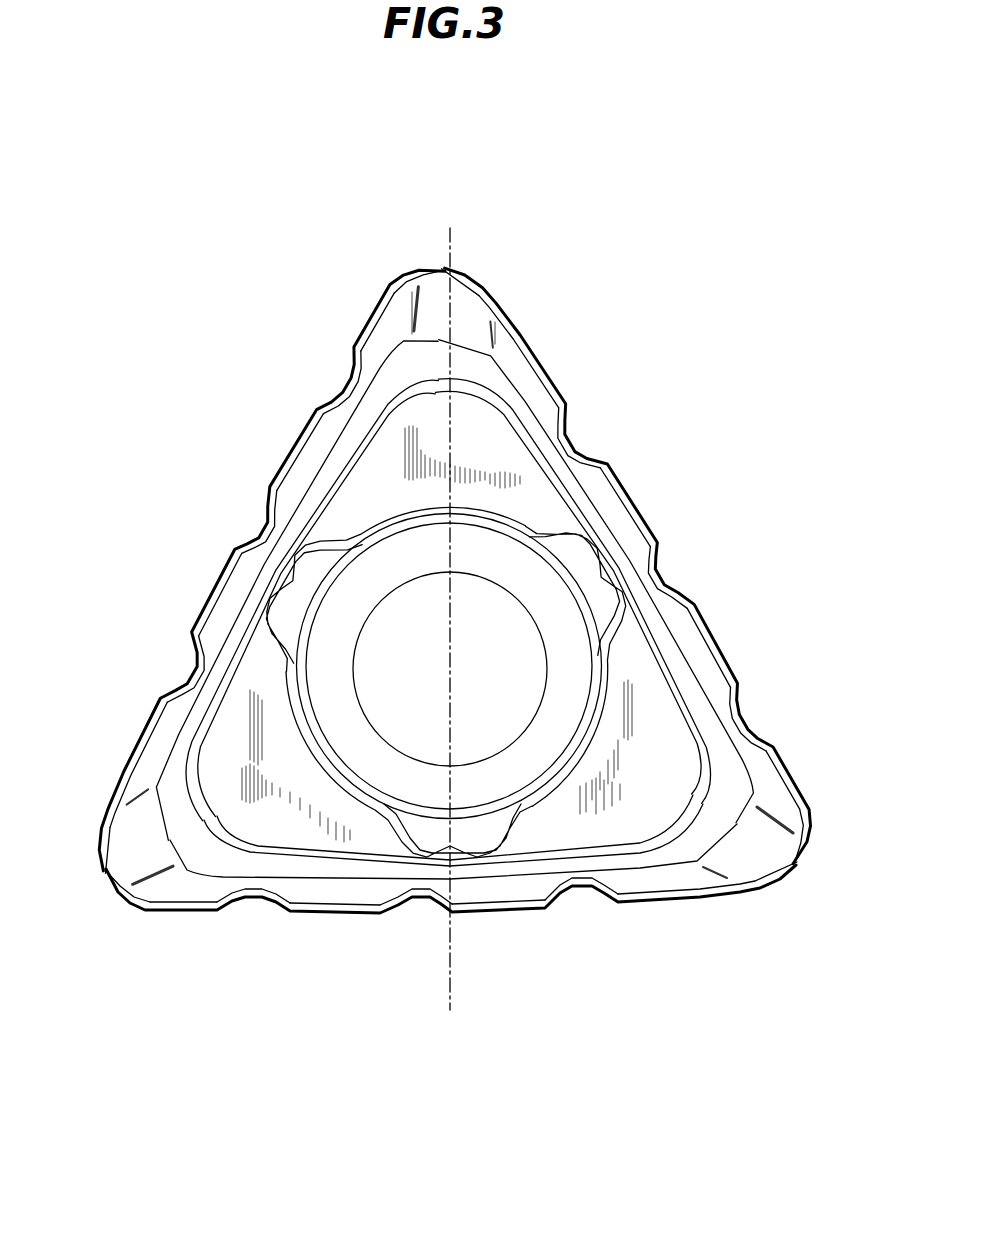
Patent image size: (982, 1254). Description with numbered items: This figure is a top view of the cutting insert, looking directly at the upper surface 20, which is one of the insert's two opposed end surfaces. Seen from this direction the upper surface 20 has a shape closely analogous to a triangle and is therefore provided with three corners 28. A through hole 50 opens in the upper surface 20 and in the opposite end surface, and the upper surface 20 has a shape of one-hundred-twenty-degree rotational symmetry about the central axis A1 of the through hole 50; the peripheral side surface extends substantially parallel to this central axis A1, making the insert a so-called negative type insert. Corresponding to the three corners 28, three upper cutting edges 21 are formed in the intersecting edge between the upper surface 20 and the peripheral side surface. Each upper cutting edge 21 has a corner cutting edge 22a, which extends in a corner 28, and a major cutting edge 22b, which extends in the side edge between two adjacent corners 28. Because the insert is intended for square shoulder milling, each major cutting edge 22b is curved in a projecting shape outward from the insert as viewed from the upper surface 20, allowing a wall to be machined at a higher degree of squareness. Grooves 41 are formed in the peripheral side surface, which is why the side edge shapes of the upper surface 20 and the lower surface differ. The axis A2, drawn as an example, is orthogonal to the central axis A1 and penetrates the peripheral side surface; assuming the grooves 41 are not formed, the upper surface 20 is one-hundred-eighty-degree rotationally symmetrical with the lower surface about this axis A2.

The upper surface 20 is at (433, 423).
The upper cutting edge 21 is at (192, 562).
The corner cutting edge 22a is at (446, 575).
The major cutting edge 22b is at (290, 447).
The corner 28 is at (404, 272).
The groove 41 is at (353, 383).
The through hole 50 is at (355, 668).
The central axis A1 is at (450, 668).
The axis A2 is at (443, 636).